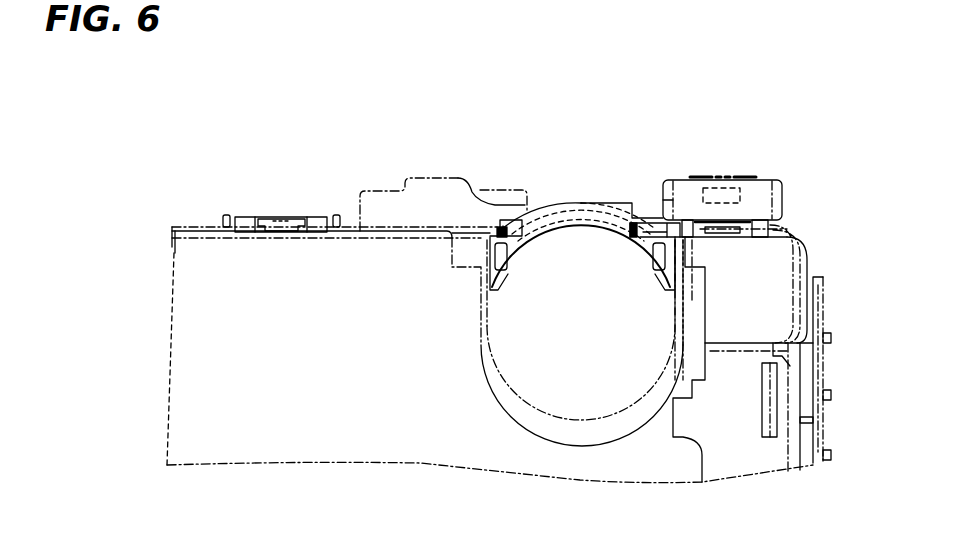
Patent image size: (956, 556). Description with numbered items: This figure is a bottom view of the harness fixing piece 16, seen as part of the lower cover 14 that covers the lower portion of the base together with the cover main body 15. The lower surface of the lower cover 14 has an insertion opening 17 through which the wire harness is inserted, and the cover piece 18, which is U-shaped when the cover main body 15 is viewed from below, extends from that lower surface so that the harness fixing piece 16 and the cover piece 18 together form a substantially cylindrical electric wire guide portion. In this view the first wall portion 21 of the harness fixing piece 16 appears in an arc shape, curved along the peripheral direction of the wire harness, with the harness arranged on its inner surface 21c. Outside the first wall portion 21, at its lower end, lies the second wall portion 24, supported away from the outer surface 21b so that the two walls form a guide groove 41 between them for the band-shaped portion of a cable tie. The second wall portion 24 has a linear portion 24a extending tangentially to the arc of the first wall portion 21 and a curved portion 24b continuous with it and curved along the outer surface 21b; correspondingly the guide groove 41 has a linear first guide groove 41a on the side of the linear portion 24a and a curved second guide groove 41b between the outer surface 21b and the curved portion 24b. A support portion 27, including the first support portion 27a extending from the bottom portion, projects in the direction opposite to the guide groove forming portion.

The lower cover 14 is at (499, 362).
The cover main body 15 is at (395, 463).
The harness fixing piece 16 is at (504, 134).
The insertion opening 17 is at (489, 368).
The cover piece 18 is at (481, 358).
The first wall portion 21 is at (582, 273).
The outer surface 21b is at (567, 214).
The inner surface 21c is at (607, 222).
The second wall portion 24 is at (556, 152).
The linear portion 24a is at (603, 203).
The curved portion 24b is at (470, 192).
The support portion 27 is at (717, 175).
The first support portion 27a is at (652, 203).
The guide groove 41 is at (572, 178).
The first guide groove 41a is at (624, 202).
The second guide groove 41b is at (557, 202).